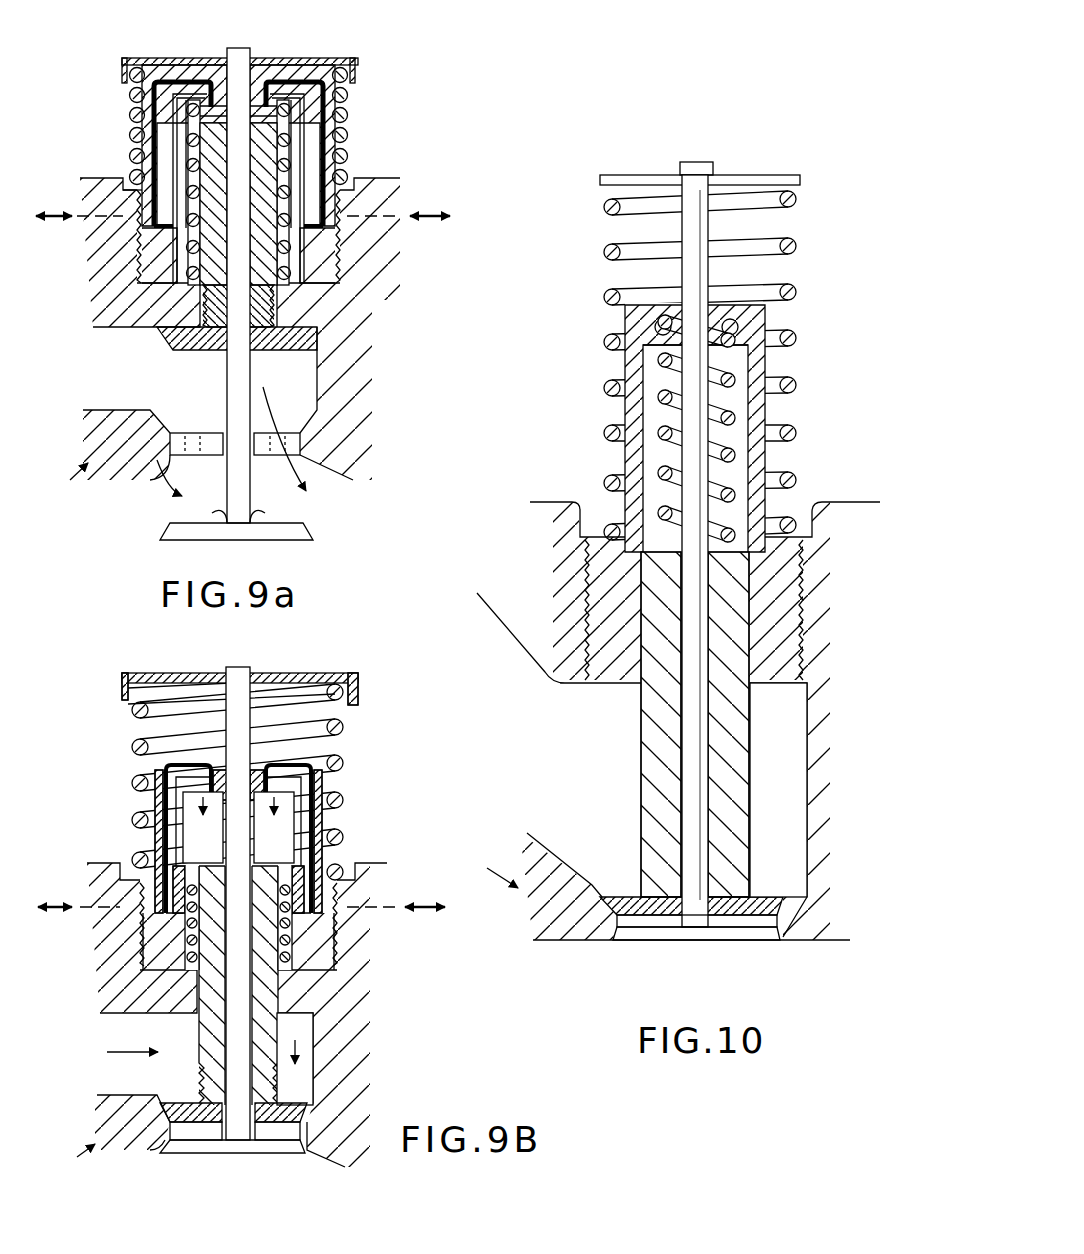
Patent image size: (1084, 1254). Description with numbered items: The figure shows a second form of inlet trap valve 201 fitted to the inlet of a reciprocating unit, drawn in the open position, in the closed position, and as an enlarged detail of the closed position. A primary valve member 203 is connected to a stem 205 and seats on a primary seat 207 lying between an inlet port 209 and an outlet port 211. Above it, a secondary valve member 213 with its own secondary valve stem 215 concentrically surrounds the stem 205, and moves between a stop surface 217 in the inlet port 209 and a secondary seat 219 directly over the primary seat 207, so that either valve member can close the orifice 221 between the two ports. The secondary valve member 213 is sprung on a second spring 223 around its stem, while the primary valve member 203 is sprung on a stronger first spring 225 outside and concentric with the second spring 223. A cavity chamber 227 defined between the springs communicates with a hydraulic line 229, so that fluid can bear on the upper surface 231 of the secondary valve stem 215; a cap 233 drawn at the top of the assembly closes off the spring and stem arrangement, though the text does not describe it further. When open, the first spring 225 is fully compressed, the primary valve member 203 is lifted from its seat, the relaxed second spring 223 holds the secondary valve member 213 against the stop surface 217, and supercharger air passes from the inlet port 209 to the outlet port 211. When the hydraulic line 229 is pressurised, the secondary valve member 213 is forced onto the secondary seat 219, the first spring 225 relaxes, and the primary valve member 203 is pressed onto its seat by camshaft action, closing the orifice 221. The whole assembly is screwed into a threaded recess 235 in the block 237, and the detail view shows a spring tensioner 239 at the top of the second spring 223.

In FIG. 9A, the inlet trap valve 201 is at (65, 487).
In FIG. 9B, the inlet trap valve 201 is at (75, 1171).
In FIG. 10, the inlet trap valve 201 is at (489, 859).
In FIG. 9A, the primary valve member 203 is at (300, 538).
In FIG. 9B, the primary valve member 203 is at (225, 1146).
In FIG. 10, the primary valve member 203 is at (732, 934).
In FIG. 9A, the stem 205 is at (211, 536).
In FIG. 9B, the stem 205 is at (242, 702).
In FIG. 10, the stem 205 is at (700, 228).
In FIG. 9A, the primary seat 207 is at (147, 480).
In FIG. 9B, the primary seat 207 is at (153, 1162).
In FIG. 10, the primary seat 207 is at (613, 947).
In FIG. 9A, the inlet port 209 is at (103, 369).
In FIG. 9B, the inlet port 209 is at (105, 1045).
In FIG. 10, the inlet port 209 is at (562, 782).
In FIG. 9A, the outlet port 211 is at (345, 490).
In FIG. 9B, the outlet port 211 is at (303, 1168).
In FIG. 10, the outlet port 211 is at (697, 955).
In FIG. 9A, the secondary valve member 213 is at (207, 338).
In FIG. 9B, the secondary valve member 213 is at (197, 1128).
In FIG. 10, the secondary valve member 213 is at (645, 895).
In FIG. 9A, the secondary valve stem 215 is at (264, 162).
In FIG. 9B, the secondary valve stem 215 is at (262, 906).
In FIG. 10, the secondary valve stem 215 is at (733, 580).
In FIG. 9A, the stop surface 217 is at (152, 327).
In FIG. 9B, the stop surface 217 is at (171, 1018).
In FIG. 10, the stop surface 217 is at (568, 684).
In FIG. 9A, the secondary seat 219 is at (304, 415).
In FIG. 9B, the secondary seat 219 is at (303, 1097).
In FIG. 10, the secondary seat 219 is at (793, 895).
In FIG. 9A, the orifice 221 is at (178, 440).
In FIG. 9B, the orifice 221 is at (171, 1106).
In FIG. 10, the orifice 221 is at (691, 906).
In FIG. 9A, the second spring 223 is at (292, 190).
In FIG. 9B, the second spring 223 is at (183, 932).
In FIG. 10, the second spring 223 is at (653, 198).
In FIG. 9A, the first spring 225 is at (130, 113).
In FIG. 9B, the first spring 225 is at (343, 762).
In FIG. 10, the first spring 225 is at (790, 250).
In FIG. 9A, the cavity chamber 227 is at (137, 194).
In FIG. 9B, the cavity chamber 227 is at (190, 817).
In FIG. 10, the cavity chamber 227 is at (640, 273).
In FIG. 9A, the hydraulic line 229 is at (84, 222).
In FIG. 9B, the hydraulic line 229 is at (97, 904).
In FIG. 9A, the upper surface 231 is at (203, 112).
In FIG. 9B, the upper surface 231 is at (190, 893).
In FIG. 10, the upper surface 231 is at (653, 550).
In FIG. 9A, the cap 233 is at (293, 70).
In FIG. 9B, the cap 233 is at (160, 688).
In FIG. 10, the cap 233 is at (700, 173).
In FIG. 9A, the threaded recess 235 is at (342, 258).
In FIG. 9B, the threaded recess 235 is at (332, 948).
In FIG. 10, the threaded recess 235 is at (694, 608).
In FIG. 9A, the block 237 is at (350, 435).
In FIG. 9B, the block 237 is at (352, 1002).
In FIG. 10, the block 237 is at (824, 672).
In FIG. 10, the spring tensioner 239 is at (735, 302).